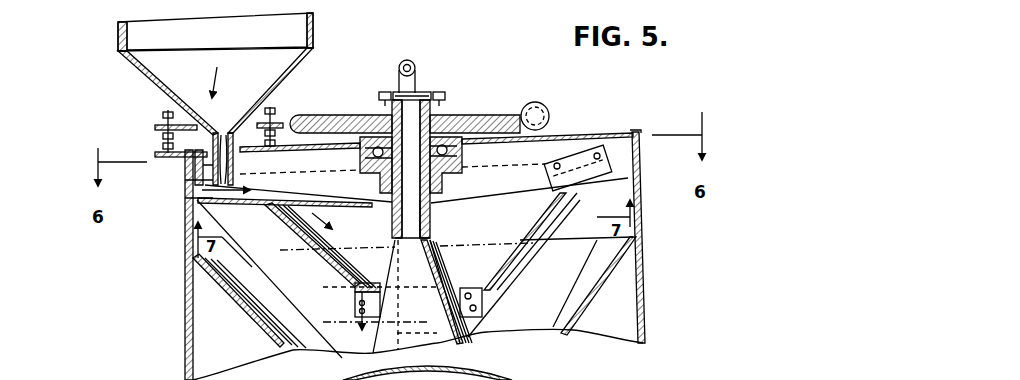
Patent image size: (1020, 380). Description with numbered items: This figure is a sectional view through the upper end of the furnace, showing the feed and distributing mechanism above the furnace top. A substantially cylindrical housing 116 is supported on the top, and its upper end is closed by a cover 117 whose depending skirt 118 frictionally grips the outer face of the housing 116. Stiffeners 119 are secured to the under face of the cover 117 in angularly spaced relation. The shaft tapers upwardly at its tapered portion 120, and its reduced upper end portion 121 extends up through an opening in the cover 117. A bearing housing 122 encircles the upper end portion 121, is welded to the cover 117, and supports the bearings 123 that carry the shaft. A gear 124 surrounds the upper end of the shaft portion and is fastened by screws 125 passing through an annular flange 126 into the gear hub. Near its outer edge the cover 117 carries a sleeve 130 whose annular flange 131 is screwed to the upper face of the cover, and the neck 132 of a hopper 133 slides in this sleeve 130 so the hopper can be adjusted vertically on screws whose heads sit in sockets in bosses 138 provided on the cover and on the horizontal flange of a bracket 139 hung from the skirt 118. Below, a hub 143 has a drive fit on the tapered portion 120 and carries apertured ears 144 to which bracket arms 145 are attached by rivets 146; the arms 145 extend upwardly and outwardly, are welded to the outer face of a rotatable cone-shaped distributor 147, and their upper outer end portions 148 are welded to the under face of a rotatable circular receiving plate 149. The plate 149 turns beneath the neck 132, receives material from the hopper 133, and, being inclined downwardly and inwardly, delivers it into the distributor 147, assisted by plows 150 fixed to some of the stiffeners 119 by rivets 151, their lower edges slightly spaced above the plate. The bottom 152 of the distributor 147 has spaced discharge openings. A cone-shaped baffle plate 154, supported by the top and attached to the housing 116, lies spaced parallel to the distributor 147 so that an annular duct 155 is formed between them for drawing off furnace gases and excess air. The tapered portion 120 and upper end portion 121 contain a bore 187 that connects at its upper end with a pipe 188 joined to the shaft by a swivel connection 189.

The housing 116 is at (643, 278).
The cover 117 is at (573, 132).
The depending skirt 118 is at (640, 147).
The stiffeners 119 is at (358, 190).
The tapered portion 120 is at (437, 253).
The upper end portion 121 is at (431, 213).
The bearing housing 122 is at (380, 177).
The bearings 123 is at (453, 140).
The gear 124 is at (498, 108).
The screws 125 is at (385, 92).
The annular flange 126 is at (380, 106).
The sleeve 130 is at (240, 161).
The annular flange 131 is at (173, 177).
The neck 132 is at (187, 208).
The hopper 133 is at (118, 49).
The bosses 138 is at (160, 143).
The bracket 139 is at (160, 160).
The hub 143 is at (474, 327).
The apertured ears 144 is at (482, 297).
The bracket arms 145 is at (513, 280).
The rivets 146 is at (355, 308).
The cone-shaped distributor 147 is at (318, 264).
The upper outer end portions 148 is at (590, 193).
The receiving plate 149 is at (244, 205).
The plows 150 is at (636, 136).
The rivets 151 is at (597, 167).
The bottom 152 is at (456, 292).
The baffle plate 154 is at (632, 255).
The annular duct 155 is at (585, 283).
The bore 187 is at (413, 218).
The pipe 188 is at (405, 61).
The swivel connection 189 is at (418, 92).